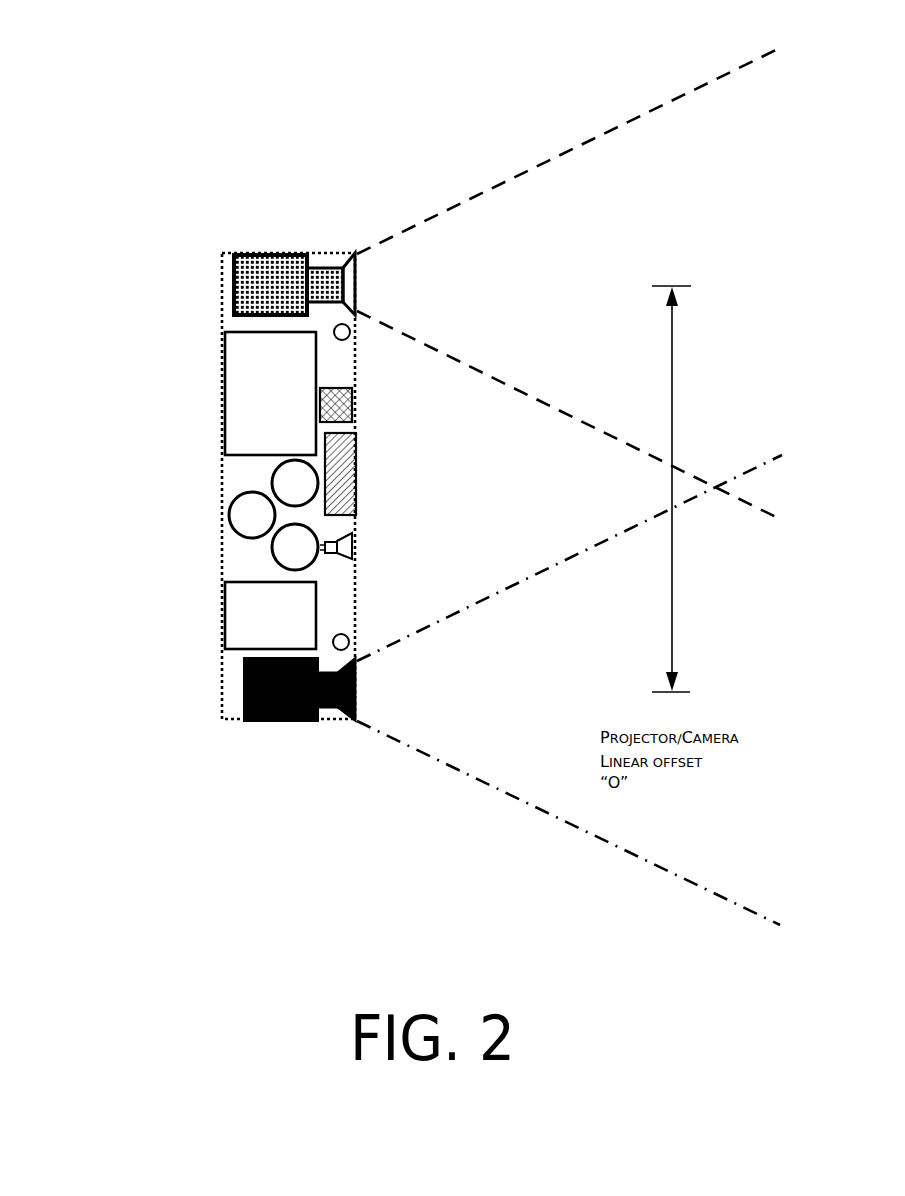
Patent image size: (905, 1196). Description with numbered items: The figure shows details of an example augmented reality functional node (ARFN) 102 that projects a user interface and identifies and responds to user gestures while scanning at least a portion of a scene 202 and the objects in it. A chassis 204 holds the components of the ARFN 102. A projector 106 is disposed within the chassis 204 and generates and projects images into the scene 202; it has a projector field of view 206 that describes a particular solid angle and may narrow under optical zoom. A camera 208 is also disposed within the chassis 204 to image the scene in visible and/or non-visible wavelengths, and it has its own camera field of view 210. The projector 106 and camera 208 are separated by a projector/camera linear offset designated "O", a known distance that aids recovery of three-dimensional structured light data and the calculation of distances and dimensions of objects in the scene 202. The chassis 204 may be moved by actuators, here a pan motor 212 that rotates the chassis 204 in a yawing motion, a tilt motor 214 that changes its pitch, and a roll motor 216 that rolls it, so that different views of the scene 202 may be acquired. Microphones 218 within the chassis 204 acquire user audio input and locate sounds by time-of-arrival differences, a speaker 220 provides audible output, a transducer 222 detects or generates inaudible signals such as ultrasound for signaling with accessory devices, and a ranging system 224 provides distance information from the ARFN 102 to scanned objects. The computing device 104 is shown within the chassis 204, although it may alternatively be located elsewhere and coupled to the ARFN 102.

The augmented reality functional node 102 is at (255, 253).
The computing device 104 is at (272, 395).
The projector 106 is at (272, 285).
The scene 202 is at (810, 489).
The chassis 204 is at (284, 253).
The projector field of view 206 is at (566, 142).
The camera 208 is at (285, 690).
The camera field of view 210 is at (514, 810).
The pan motor 212 is at (272, 483).
The tilt motor 214 is at (234, 530).
The roll motor 216 is at (278, 562).
The microphone 218 is at (349, 330).
The speaker 220 is at (355, 546).
The transducer 222 is at (350, 397).
The ranging system 224 is at (346, 468).